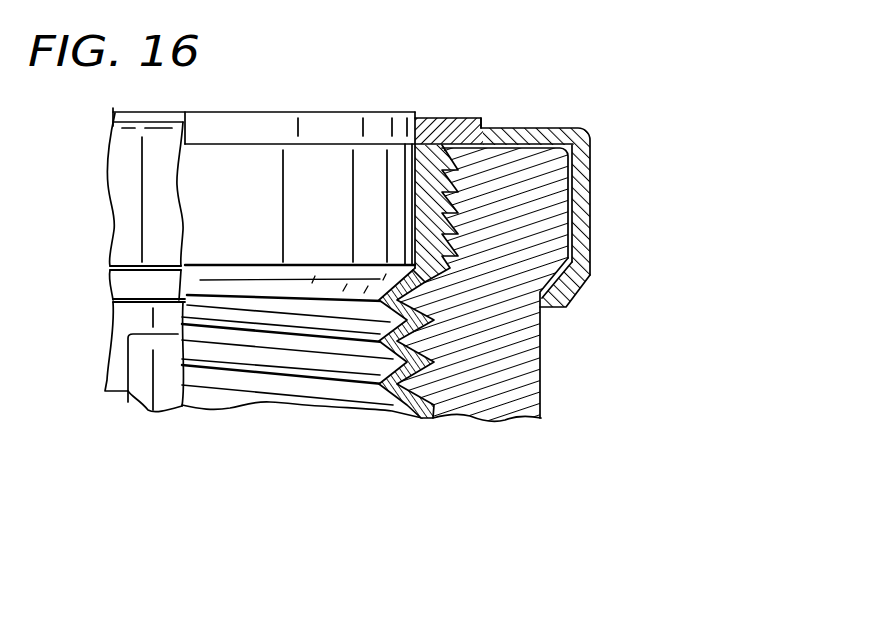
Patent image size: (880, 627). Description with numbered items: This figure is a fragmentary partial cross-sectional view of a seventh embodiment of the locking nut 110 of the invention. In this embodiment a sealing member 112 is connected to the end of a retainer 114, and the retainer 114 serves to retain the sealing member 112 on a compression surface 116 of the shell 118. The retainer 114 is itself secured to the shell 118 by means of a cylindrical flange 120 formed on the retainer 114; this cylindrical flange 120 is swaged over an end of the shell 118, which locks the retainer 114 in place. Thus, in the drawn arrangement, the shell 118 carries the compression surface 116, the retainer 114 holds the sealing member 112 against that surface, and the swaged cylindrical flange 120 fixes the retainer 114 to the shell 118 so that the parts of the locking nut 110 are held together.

The locking nut 110 is at (435, 233).
The sealing member 112 is at (452, 122).
The retainer 114 is at (590, 238).
The compression surface 116 is at (540, 167).
The shell 118 is at (497, 366).
The cylindrical flange 120 is at (590, 281).